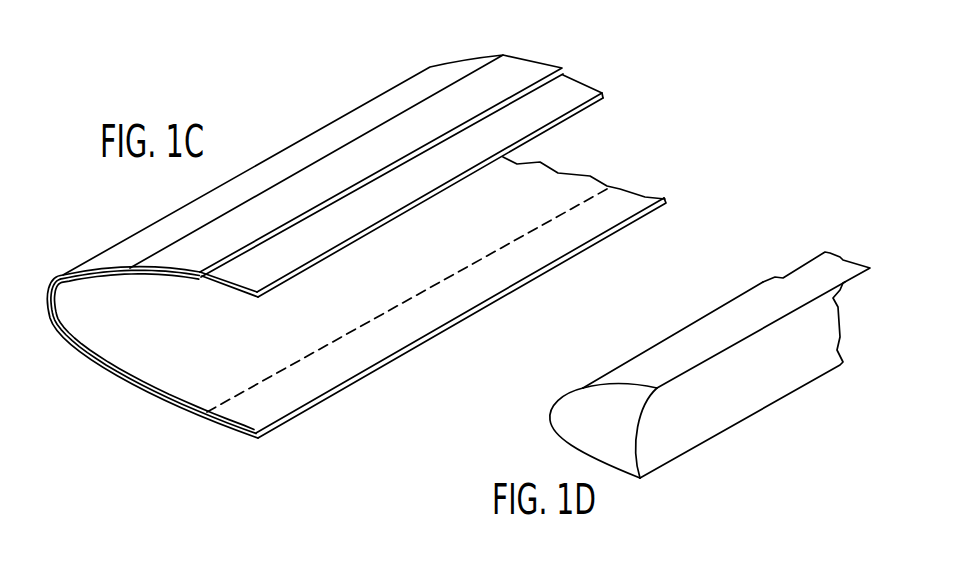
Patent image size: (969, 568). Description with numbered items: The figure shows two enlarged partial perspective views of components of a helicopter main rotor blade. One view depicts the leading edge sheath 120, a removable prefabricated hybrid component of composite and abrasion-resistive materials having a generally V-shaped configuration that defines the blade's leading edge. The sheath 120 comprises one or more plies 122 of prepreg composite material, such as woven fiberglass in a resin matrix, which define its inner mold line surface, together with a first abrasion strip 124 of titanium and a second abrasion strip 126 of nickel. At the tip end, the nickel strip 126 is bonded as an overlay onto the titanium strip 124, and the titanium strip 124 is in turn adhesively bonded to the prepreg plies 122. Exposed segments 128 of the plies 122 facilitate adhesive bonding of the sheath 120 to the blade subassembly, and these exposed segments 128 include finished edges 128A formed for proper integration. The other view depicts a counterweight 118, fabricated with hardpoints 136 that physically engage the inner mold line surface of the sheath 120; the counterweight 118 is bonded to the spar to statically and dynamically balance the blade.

In FIG. 1D, the counterweight 118 is at (830, 249).
In FIG. 1C, the leading edge sheath 120 is at (117, 391).
In FIG. 1C, the plies of prepreg composite material 122 is at (568, 94).
In FIG. 1C, the first abrasion strip 124 is at (513, 72).
In FIG. 1C, the second abrasion strip 126 is at (440, 78).
In FIG. 1C, the exposed segments 128 is at (257, 270).
In FIG. 1C, the finished edges 128A is at (586, 112).
In FIG. 1D, the hardpoints 136 is at (588, 374).